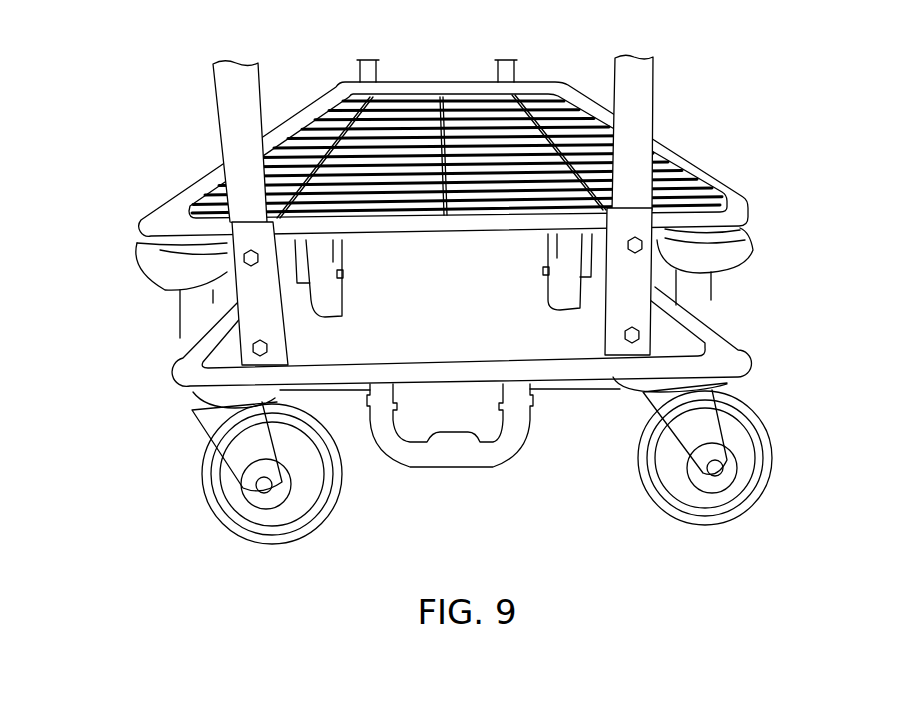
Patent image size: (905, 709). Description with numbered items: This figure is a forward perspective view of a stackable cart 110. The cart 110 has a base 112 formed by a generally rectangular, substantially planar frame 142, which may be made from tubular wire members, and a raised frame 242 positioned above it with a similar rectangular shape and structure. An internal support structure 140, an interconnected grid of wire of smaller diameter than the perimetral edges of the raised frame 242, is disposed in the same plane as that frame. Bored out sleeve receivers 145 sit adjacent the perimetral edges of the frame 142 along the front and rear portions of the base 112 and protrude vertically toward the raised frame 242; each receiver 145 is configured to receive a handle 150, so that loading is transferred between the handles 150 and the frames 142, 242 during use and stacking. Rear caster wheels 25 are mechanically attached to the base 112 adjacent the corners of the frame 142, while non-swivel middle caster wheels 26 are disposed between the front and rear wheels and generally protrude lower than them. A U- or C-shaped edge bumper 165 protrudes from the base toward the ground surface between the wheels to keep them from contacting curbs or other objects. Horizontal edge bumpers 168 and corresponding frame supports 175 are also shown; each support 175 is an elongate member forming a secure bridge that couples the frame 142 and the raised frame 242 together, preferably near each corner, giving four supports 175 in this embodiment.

The stackable cart 110 is at (137, 80).
The base 112 is at (138, 470).
The handle 150 is at (377, 72).
The internal support structure 140 is at (304, 128).
The raised frame 242 is at (150, 230).
The horizontal edge bumper 168 is at (155, 276).
The frame support 175 is at (197, 325).
The sleeve receiver 145 is at (240, 363).
The frame 142 is at (165, 388).
The edge bumper 165 is at (470, 463).
The middle caster wheel 26 is at (330, 302).
The rear caster wheel 25 is at (270, 538).